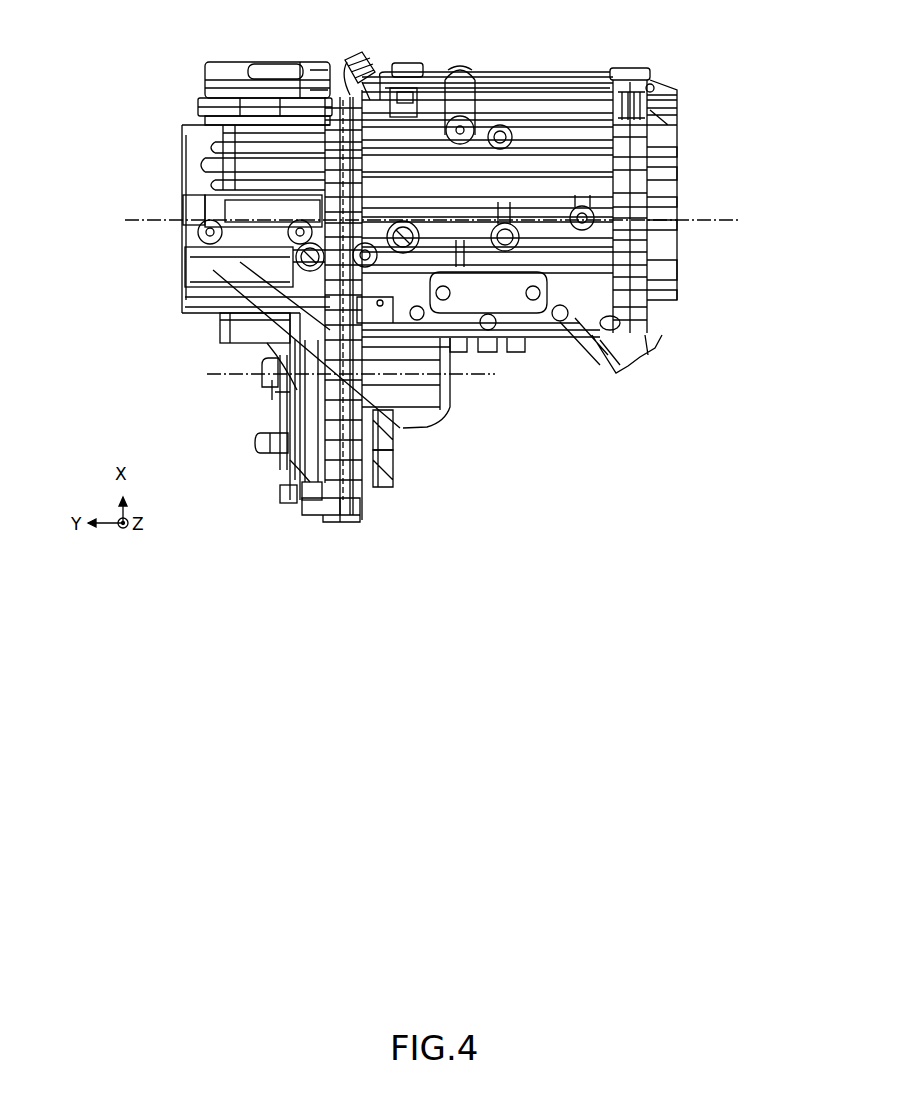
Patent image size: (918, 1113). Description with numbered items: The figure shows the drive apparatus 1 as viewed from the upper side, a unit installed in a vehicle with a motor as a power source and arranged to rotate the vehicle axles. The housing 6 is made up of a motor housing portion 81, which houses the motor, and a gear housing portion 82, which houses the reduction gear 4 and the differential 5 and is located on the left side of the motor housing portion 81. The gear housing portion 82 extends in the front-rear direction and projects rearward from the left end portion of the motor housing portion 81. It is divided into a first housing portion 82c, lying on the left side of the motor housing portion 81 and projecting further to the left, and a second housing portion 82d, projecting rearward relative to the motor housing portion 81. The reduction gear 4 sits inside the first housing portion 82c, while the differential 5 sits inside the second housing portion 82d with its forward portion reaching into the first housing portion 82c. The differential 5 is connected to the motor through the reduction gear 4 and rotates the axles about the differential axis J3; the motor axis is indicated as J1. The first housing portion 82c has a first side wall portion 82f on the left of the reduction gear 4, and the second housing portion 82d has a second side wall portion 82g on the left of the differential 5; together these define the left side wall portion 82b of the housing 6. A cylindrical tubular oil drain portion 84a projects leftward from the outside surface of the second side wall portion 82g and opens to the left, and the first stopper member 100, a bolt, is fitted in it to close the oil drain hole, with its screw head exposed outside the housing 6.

The drive apparatus 1 is at (711, 69).
The reduction gear 4 is at (293, 127).
The motor housing portion 81 is at (575, 74).
The gear housing portion 82 is at (105, 348).
The left side wall portion 82b is at (462, 435).
The first housing portion 82c is at (182, 312).
The second housing portion 82d is at (268, 465).
The first side wall portion 82f is at (395, 428).
The second side wall portion 82g is at (395, 470).
The tubular oil drain portion 84a is at (268, 392).
The first stopper member 100 is at (260, 382).
The differential 5 is at (377, 497).
The housing 6 is at (657, 392).
The first axis J1 is at (713, 215).
The differential axis J3 is at (497, 377).